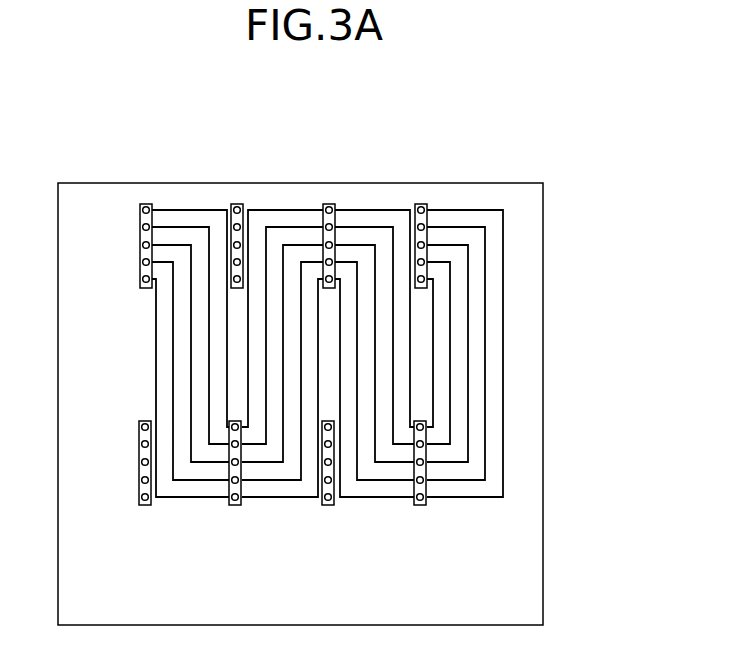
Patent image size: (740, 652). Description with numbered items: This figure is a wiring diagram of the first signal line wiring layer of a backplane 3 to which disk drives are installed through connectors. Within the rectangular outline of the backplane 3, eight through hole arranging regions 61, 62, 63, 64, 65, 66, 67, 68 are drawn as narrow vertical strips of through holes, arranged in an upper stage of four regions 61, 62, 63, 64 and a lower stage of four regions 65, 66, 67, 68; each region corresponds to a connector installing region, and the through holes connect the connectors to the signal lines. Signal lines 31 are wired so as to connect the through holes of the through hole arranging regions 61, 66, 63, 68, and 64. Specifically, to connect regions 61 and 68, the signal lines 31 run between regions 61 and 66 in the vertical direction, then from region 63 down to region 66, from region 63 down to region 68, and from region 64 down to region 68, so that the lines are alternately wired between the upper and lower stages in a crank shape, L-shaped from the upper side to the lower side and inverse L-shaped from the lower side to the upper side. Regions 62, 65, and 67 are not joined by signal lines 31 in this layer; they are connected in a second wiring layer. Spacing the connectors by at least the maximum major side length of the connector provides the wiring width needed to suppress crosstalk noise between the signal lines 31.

The substrate 3 is at (543, 482).
The signal lines 31 is at (502, 312).
The through hole arranging region 61 is at (146, 204).
The through hole arranging region 62 is at (237, 204).
The through hole arranging region 63 is at (329, 204).
The through hole arranging region 64 is at (421, 204).
The through hole arranging region 65 is at (143, 505).
The through hole arranging region 66 is at (235, 505).
The through hole arranging region 67 is at (329, 505).
The through hole arranging region 68 is at (419, 505).